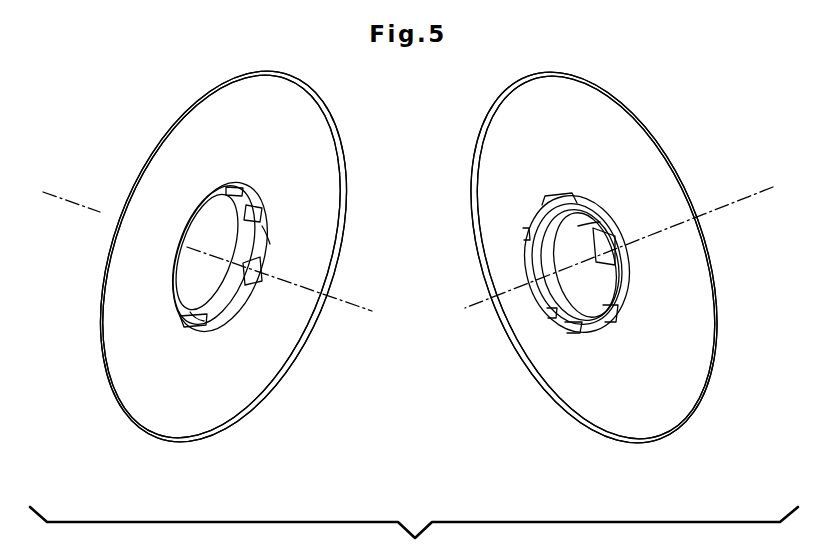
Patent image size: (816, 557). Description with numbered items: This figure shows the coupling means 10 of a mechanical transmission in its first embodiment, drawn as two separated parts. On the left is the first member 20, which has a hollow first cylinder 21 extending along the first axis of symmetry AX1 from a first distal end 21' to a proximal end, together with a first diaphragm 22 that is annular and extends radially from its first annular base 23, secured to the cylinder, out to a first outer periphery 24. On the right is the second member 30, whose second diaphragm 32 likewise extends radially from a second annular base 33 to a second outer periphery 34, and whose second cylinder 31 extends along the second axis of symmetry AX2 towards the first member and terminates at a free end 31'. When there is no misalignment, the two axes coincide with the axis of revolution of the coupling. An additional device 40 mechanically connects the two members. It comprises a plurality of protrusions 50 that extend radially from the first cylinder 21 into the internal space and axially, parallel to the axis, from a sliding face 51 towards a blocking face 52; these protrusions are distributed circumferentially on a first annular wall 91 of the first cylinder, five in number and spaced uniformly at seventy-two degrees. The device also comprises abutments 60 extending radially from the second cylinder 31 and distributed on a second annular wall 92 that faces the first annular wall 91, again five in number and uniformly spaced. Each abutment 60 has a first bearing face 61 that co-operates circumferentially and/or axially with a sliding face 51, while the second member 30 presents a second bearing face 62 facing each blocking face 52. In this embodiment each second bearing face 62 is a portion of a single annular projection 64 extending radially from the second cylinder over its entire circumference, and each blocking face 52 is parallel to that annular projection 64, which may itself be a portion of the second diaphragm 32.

The coupling means 10 is at (688, 117).
The first member 20 is at (252, 430).
The first cylinder 21 is at (249, 179).
The first distal end 21' is at (159, 315).
The first diaphragm 22 is at (284, 178).
The first annular base 23 is at (270, 240).
The first outer periphery 24 is at (158, 157).
The second member 30 is at (508, 400).
The second cylinder 31 is at (643, 327).
The free end 31' is at (547, 162).
The second diaphragm 32 is at (572, 169).
The second annular base 33 is at (585, 228).
The second outer periphery 34 is at (590, 88).
The additional device 40 is at (268, 298).
The protrusion 50 is at (267, 295).
The sliding face 51 is at (200, 320).
The blocking face 52 is at (247, 302).
The abutment 60 is at (610, 262).
The first bearing face 61 is at (600, 248).
The second bearing face 62 is at (582, 302).
The annular projection 64 is at (622, 264).
The first annular wall 91 is at (267, 238).
The second annular wall 92 is at (575, 233).
The first axis of symmetry AX1 is at (66, 198).
The second axis of symmetry AX2 is at (758, 192).